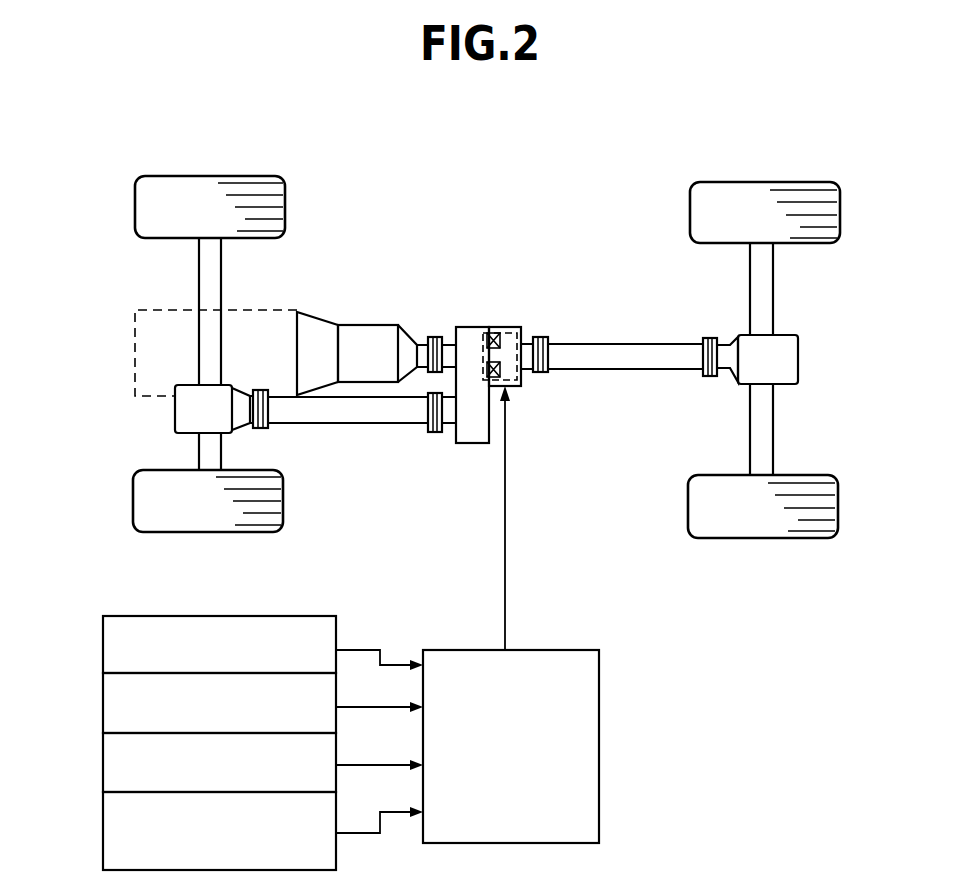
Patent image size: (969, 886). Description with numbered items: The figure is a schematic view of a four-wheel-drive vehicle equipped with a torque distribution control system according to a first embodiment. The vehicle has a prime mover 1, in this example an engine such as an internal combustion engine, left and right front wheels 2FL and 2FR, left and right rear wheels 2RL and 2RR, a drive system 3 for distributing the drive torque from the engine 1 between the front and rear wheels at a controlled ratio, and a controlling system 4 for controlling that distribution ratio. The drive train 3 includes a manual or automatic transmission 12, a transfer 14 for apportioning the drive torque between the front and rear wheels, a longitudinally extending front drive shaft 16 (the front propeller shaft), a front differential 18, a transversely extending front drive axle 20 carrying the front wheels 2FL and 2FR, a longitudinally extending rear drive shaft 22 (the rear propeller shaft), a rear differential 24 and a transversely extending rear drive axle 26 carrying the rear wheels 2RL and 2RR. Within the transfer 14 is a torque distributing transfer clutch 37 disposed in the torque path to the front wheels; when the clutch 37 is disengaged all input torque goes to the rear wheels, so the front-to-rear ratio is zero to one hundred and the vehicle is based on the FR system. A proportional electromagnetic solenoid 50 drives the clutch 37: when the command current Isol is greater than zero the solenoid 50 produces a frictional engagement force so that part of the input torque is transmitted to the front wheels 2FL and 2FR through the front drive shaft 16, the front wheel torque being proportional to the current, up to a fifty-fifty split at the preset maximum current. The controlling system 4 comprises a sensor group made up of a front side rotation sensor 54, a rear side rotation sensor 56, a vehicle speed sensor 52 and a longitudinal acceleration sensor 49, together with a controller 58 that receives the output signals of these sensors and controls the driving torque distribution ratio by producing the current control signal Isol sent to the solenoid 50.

The right front wheel 2FR is at (217, 176).
The left front wheel 2FL is at (238, 533).
The right rear wheel 2RR is at (764, 182).
The left rear wheel 2RL is at (788, 541).
The prime mover 1 is at (268, 303).
The drive system 3 is at (487, 262).
The controlling system 4 is at (398, 566).
The transmission 12 is at (366, 325).
The transfer 14 is at (462, 327).
The front drive shaft 16 is at (343, 425).
The front differential 18 is at (175, 412).
The front drive axle 20 is at (198, 272).
The rear drive shaft 22 is at (620, 344).
The rear differential 24 is at (800, 352).
The rear drive axle 26 is at (776, 415).
The transfer clutch 37 is at (518, 327).
The longitudinal acceleration sensor 49 is at (103, 833).
The solenoid 50 is at (493, 333).
The vehicle speed sensor 52 is at (103, 765).
The front side rotation sensor 54 is at (103, 643).
The rear side rotation sensor 56 is at (103, 703).
The controller 58 is at (600, 745).